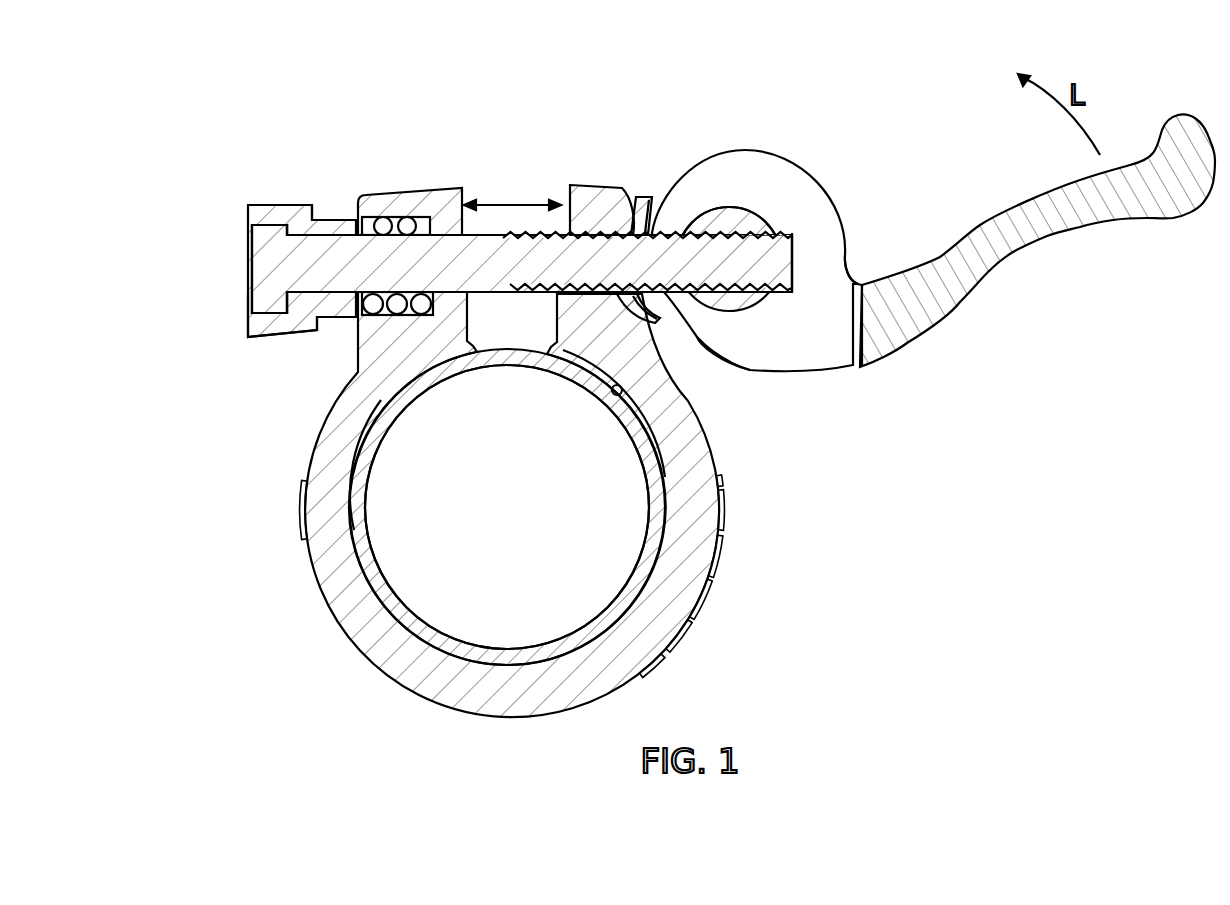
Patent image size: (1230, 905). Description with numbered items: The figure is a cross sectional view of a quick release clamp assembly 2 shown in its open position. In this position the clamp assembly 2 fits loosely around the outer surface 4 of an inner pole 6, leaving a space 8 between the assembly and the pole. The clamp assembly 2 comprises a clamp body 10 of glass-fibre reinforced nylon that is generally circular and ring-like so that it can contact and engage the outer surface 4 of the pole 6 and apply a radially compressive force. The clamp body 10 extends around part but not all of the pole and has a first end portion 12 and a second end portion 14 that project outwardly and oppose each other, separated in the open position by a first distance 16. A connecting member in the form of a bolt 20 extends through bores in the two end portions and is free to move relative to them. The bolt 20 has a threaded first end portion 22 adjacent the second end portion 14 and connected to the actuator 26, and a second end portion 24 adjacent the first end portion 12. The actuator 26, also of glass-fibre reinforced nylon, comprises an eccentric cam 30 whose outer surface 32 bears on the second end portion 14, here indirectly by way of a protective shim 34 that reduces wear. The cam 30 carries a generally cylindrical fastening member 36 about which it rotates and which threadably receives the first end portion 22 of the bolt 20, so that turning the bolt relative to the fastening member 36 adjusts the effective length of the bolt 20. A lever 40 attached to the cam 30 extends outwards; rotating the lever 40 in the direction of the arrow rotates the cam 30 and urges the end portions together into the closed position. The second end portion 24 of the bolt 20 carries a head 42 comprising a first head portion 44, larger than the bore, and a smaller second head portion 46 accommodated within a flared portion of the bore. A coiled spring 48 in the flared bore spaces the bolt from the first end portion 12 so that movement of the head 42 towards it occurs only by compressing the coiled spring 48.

The clamp assembly 2 is at (697, 404).
The outer surface 4 is at (612, 392).
The inner pole 6 is at (598, 628).
The space 8 is at (563, 350).
The clamp body 10 is at (340, 545).
The first end portion 12 is at (428, 200).
The second end portion 14 is at (597, 203).
The first distance 16 is at (515, 200).
The bolt 20 is at (506, 274).
The first end portion of the bolt 22 is at (770, 257).
The second end portion of the bolt 24 is at (340, 275).
The actuator 26 is at (901, 238).
The cam 30 is at (810, 333).
The outer surface of the cam 32 is at (697, 340).
The protective shim 34 is at (638, 197).
The fastening member 36 is at (725, 232).
The lever 40 is at (948, 292).
The head 42 is at (318, 198).
The first head portion 44 is at (268, 208).
The second head portion 46 is at (340, 308).
The coiled spring 48 is at (368, 212).